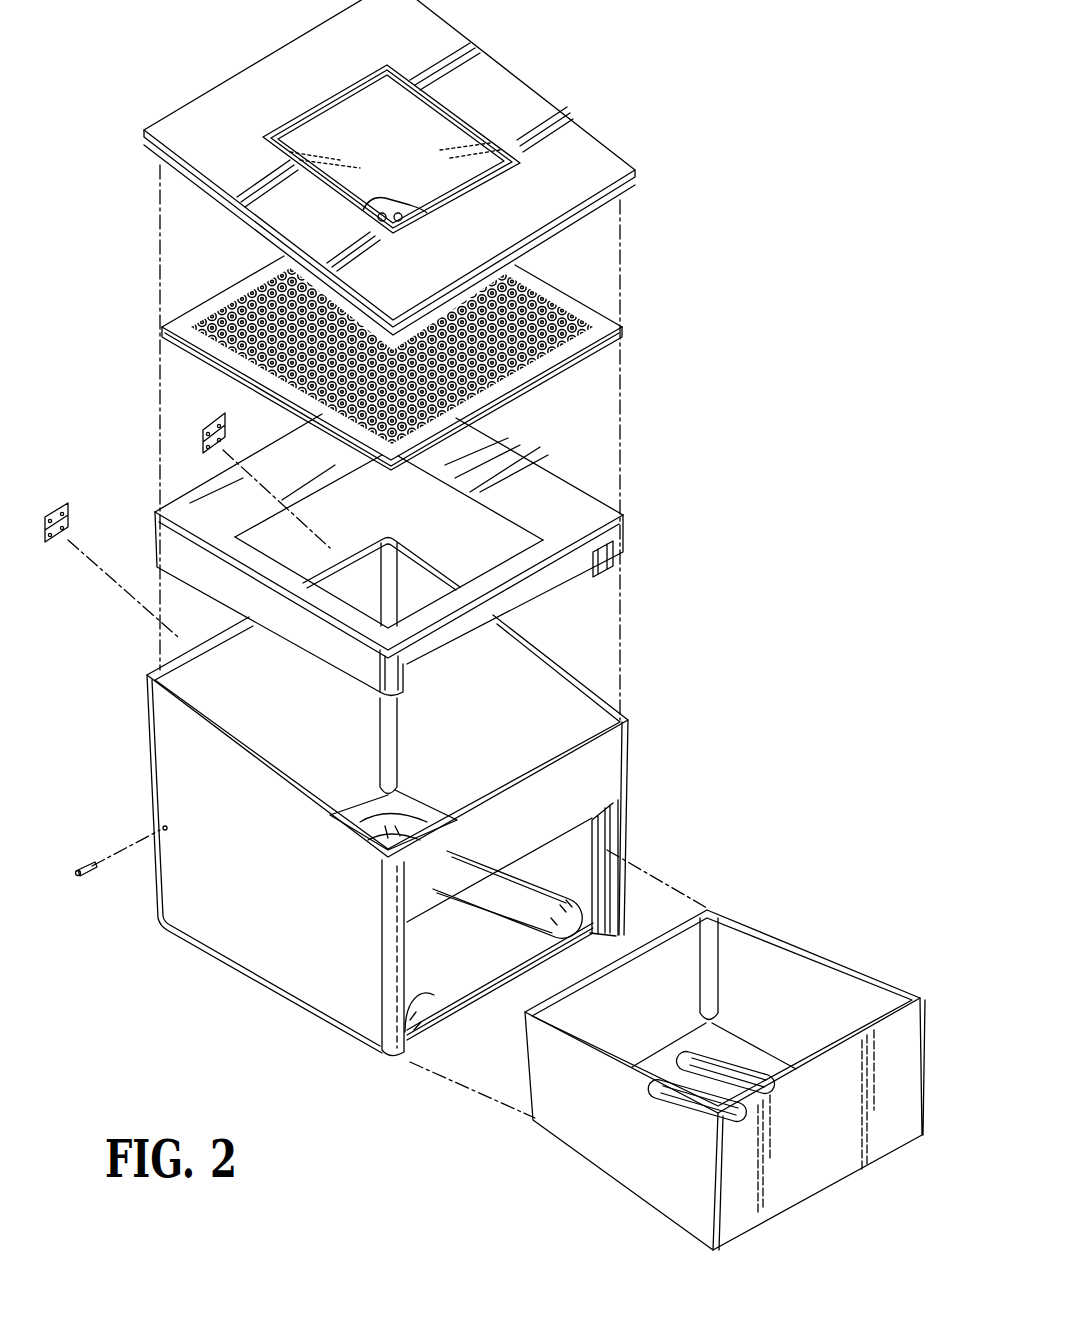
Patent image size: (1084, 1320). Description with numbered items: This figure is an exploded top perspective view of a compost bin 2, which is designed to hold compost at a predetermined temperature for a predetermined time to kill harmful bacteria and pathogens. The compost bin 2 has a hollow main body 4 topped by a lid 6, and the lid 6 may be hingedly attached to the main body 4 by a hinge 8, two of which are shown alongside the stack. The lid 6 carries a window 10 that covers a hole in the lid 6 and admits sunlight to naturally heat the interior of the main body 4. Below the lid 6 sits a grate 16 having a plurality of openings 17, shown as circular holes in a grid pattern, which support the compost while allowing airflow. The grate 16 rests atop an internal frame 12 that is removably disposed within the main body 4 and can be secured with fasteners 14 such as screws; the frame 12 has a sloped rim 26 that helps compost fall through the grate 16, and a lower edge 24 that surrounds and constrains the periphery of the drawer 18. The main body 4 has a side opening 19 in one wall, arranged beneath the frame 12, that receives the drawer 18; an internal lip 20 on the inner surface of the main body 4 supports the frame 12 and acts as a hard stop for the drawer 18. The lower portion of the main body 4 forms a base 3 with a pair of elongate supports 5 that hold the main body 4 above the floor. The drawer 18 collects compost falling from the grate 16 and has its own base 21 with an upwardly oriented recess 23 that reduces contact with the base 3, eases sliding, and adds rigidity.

The compost bin 2 is at (766, 146).
The base 3 is at (441, 977).
The main body 4 is at (409, 882).
The elongate supports 5 is at (503, 917).
The lid 6 is at (245, 100).
The hinge 8 is at (206, 428).
The window 10 is at (418, 126).
The internal frame 12 is at (443, 555).
The fasteners 14 is at (90, 880).
The grate 16 is at (451, 339).
The openings 17 is at (276, 303).
The drawer 18 is at (737, 1060).
The side opening 19 is at (553, 858).
The internal lip 20 is at (598, 883).
The base 21 is at (655, 1070).
The upwardly oriented recess 23 is at (760, 1070).
The lower edge 24 is at (590, 568).
The sloped rim 26 is at (505, 478).